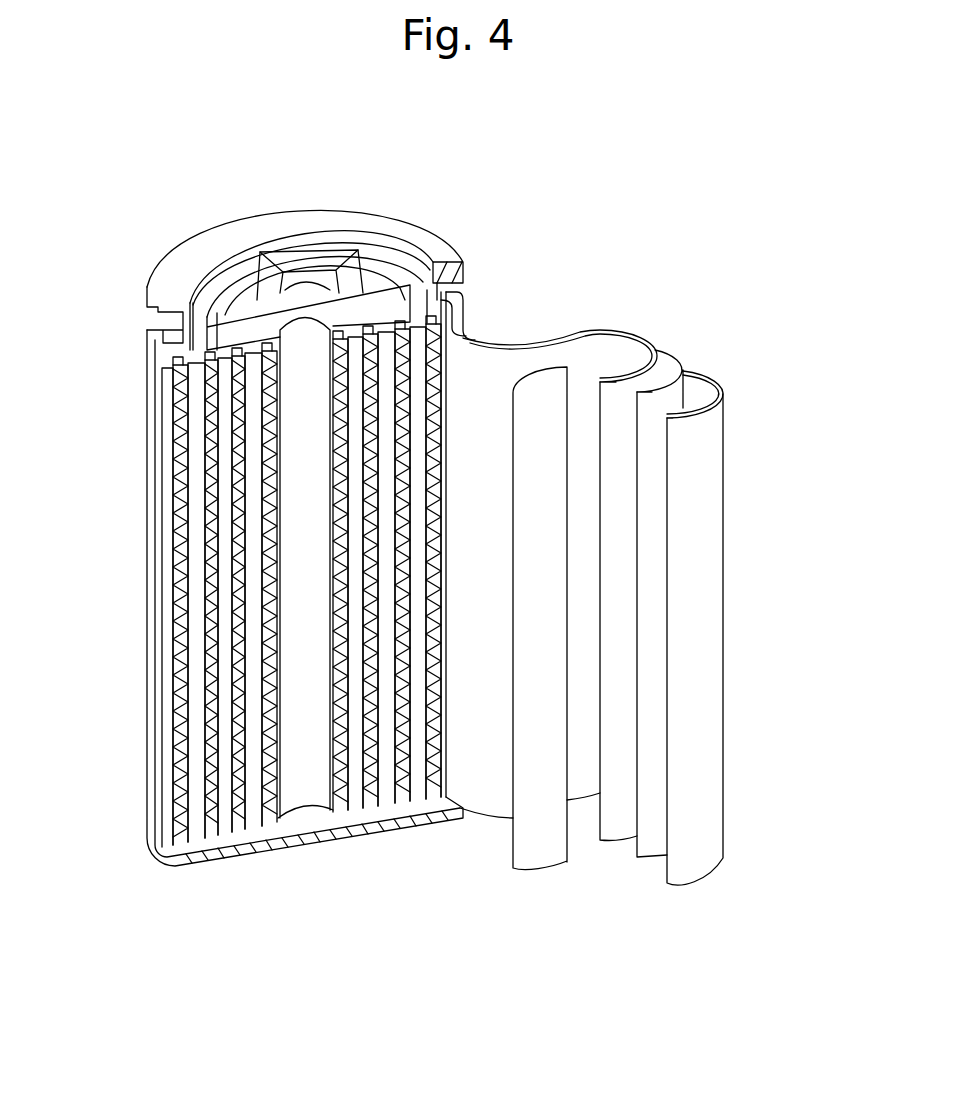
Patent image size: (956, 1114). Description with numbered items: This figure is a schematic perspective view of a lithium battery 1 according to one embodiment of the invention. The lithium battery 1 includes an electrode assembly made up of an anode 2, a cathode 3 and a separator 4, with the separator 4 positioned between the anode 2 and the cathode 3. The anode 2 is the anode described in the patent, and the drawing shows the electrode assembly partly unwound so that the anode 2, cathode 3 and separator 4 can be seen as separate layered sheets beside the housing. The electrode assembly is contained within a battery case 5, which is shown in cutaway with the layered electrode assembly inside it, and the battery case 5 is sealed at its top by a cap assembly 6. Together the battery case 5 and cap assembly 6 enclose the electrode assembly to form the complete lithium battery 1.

The lithium battery 1 is at (484, 581).
The anode 2 is at (708, 492).
The cathode 3 is at (618, 392).
The separator 4 is at (677, 392).
The battery case 5 is at (147, 790).
The cap assembly 6 is at (320, 247).